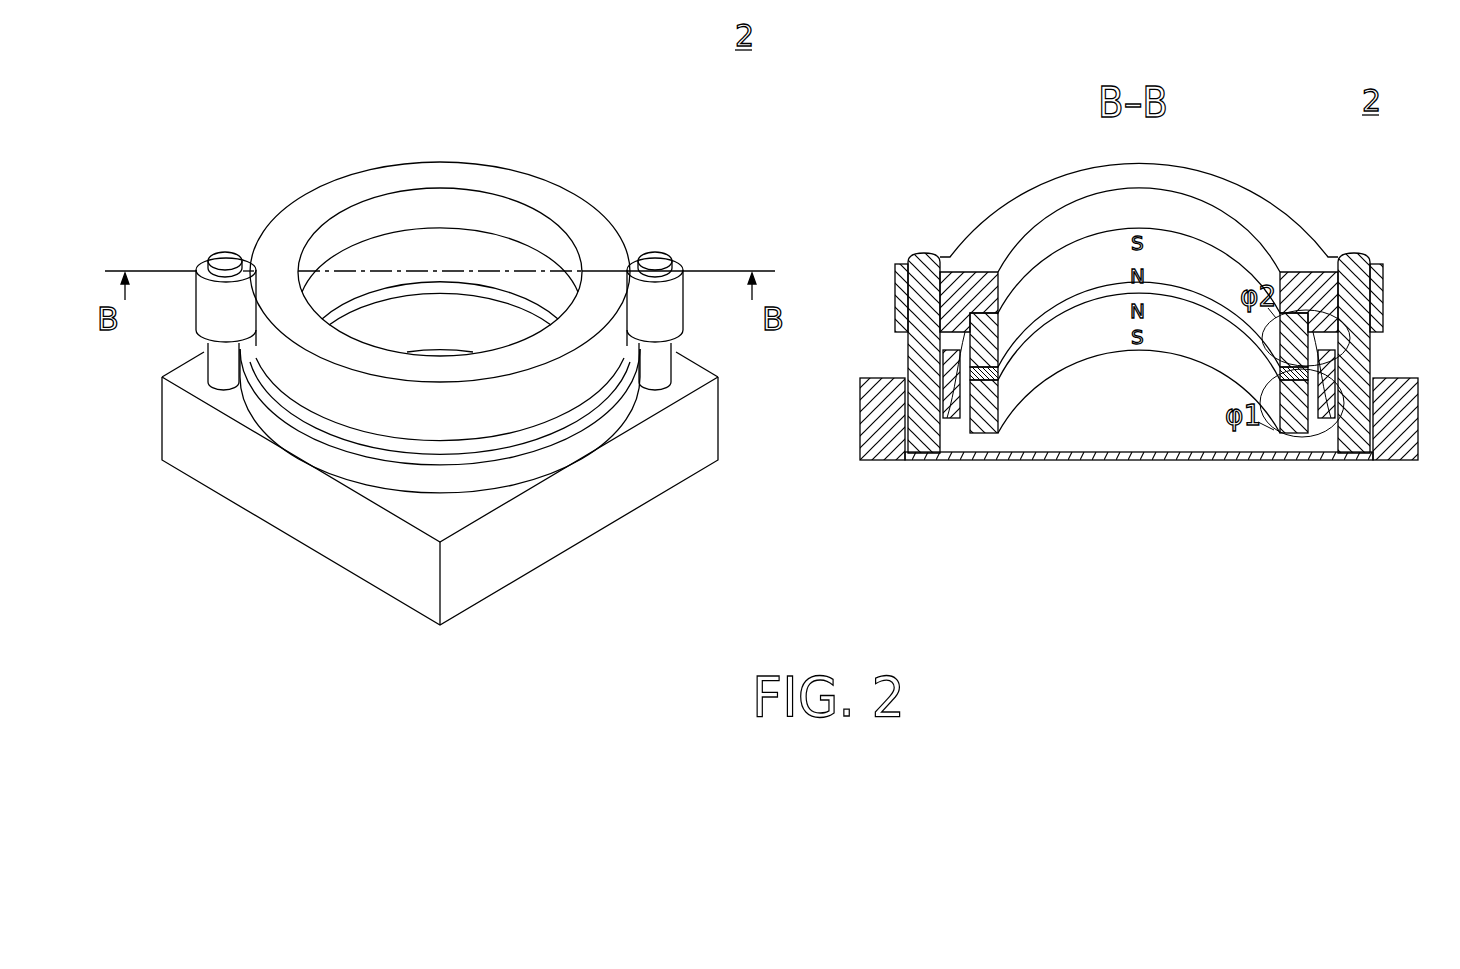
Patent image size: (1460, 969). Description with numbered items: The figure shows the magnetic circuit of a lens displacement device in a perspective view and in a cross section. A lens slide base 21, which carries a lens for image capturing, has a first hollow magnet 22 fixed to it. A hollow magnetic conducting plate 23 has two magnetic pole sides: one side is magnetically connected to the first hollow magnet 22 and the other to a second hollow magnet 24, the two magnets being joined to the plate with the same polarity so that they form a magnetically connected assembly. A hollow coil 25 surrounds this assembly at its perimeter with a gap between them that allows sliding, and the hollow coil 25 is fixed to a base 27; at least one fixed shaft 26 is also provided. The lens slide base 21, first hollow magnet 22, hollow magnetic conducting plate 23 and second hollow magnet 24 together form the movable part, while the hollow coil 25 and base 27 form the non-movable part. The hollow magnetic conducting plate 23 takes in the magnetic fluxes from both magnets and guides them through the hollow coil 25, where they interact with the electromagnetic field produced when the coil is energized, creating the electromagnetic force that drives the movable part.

The lens slide base 21 is at (573, 210).
The first hollow magnet 22 is at (478, 322).
The hollow magnetic conducting plate 23 is at (440, 290).
The second hollow magnet 24 is at (390, 258).
The hollow coil 25 is at (572, 450).
The fixed shaft 26 is at (655, 262).
The base 27 is at (225, 468).